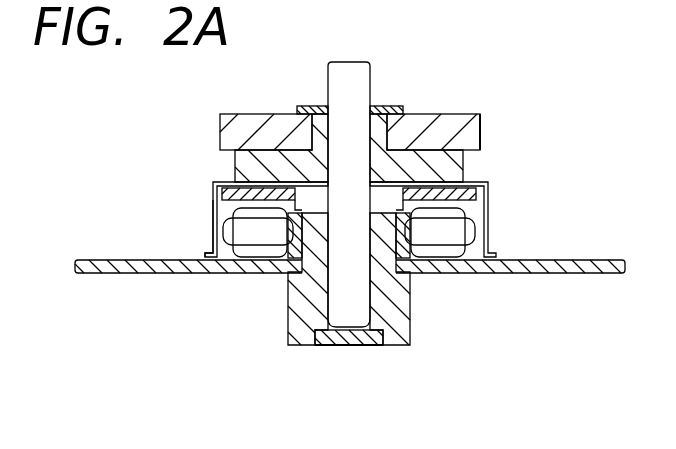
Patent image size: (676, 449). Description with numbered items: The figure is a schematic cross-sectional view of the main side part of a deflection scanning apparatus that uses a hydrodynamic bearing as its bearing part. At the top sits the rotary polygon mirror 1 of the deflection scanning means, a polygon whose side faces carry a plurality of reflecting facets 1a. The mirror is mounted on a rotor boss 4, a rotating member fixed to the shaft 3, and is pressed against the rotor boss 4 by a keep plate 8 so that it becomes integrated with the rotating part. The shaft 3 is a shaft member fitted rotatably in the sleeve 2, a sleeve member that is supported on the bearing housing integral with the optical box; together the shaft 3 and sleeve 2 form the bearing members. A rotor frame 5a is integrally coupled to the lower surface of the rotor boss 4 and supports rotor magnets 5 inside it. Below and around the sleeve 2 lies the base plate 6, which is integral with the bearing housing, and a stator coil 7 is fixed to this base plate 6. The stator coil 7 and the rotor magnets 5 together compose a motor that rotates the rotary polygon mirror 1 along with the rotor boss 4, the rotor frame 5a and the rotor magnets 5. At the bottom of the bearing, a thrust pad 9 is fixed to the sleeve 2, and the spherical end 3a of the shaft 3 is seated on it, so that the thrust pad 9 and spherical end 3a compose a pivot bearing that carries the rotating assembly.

The rotary polygon mirror 1 is at (470, 113).
The reflecting facets 1a is at (494, 126).
The sleeve 2 is at (400, 346).
The shaft 3 is at (370, 70).
The spherical end 3a is at (358, 346).
The rotor boss 4 is at (463, 166).
The rotor magnets 5 is at (222, 193).
The rotor frame 5a is at (213, 228).
The base plate 6 is at (120, 273).
The stator coil 7 is at (252, 243).
The keep plate 8 is at (303, 106).
The thrust pad 9 is at (327, 346).